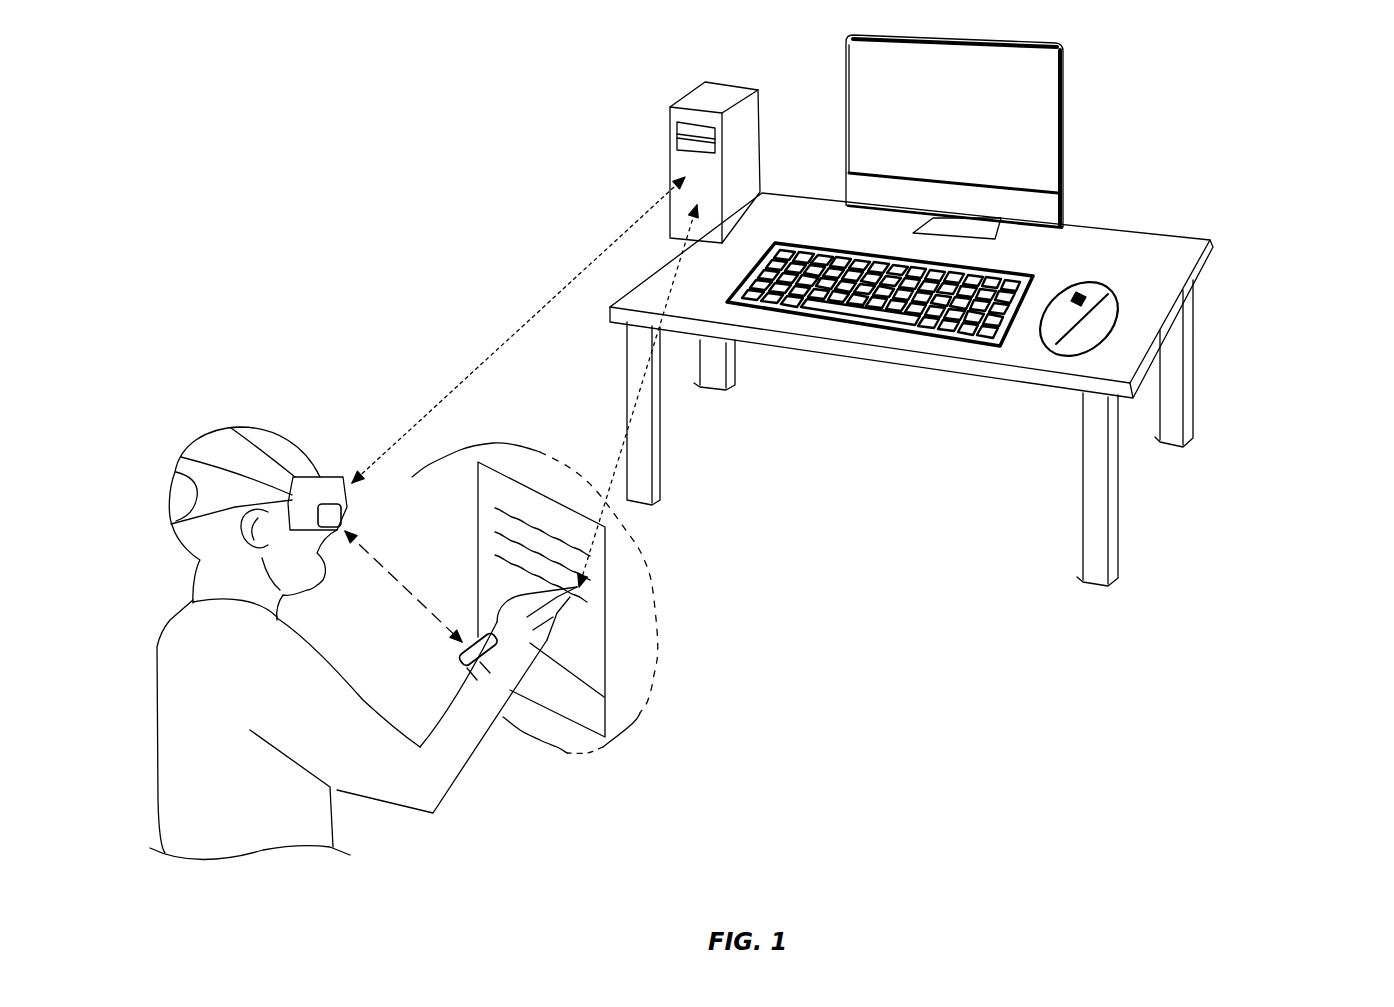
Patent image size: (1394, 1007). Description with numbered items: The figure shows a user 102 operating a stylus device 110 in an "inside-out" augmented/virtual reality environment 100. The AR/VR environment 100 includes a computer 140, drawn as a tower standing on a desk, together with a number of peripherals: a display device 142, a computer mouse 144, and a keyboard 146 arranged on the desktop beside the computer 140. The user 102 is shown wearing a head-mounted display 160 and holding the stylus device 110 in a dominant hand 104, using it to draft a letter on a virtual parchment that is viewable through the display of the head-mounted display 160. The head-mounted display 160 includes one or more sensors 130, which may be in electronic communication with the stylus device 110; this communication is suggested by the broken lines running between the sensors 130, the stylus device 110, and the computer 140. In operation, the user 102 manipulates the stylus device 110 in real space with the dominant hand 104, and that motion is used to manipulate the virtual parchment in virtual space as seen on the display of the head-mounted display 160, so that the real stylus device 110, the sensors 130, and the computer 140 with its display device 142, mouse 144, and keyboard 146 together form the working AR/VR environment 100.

The AR/VR environment 100 is at (1278, 92).
The user 102 is at (157, 693).
The dominant hand 104 is at (643, 713).
The stylus device 110 is at (660, 645).
The sensors 130 is at (325, 505).
The computer 140 is at (700, 90).
The display device 142 is at (1068, 102).
The computer mouse 144 is at (1105, 290).
The keyboard 146 is at (1027, 267).
The head-mounted display 160 is at (238, 437).